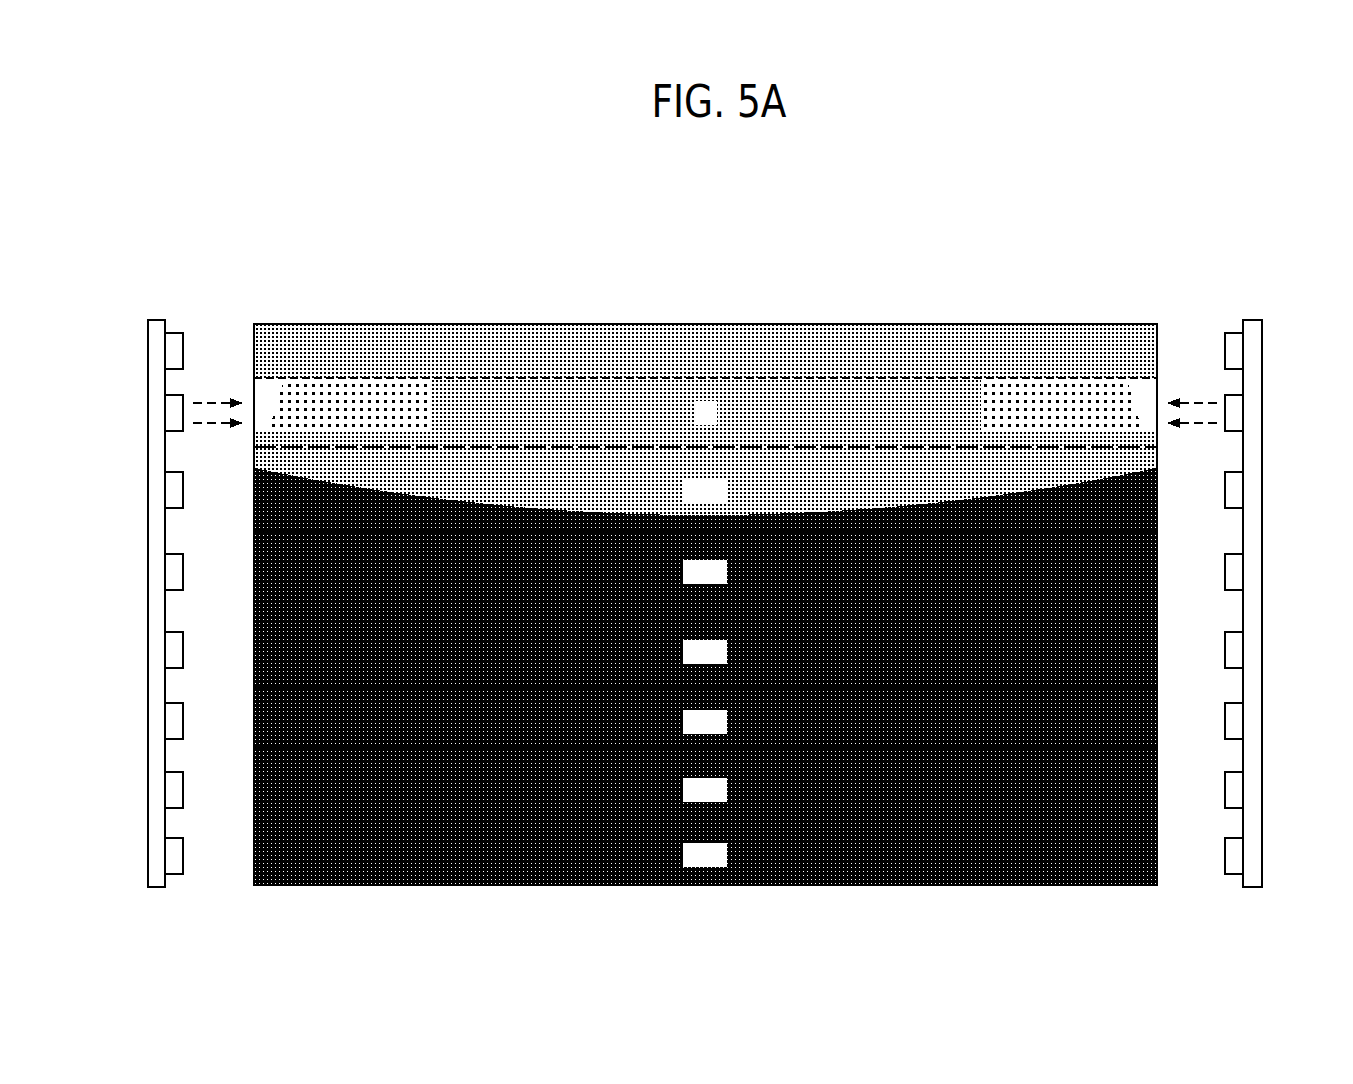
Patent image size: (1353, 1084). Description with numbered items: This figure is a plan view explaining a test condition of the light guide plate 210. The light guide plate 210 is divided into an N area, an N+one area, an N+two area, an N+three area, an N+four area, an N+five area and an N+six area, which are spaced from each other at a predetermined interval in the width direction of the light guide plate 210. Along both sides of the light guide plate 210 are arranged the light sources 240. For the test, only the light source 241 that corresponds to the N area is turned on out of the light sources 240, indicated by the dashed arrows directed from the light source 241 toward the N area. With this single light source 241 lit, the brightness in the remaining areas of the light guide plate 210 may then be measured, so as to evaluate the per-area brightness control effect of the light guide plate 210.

The light guide plate 210 is at (931, 324).
The light sources 240 is at (156, 320).
The light source 241 is at (176, 410).